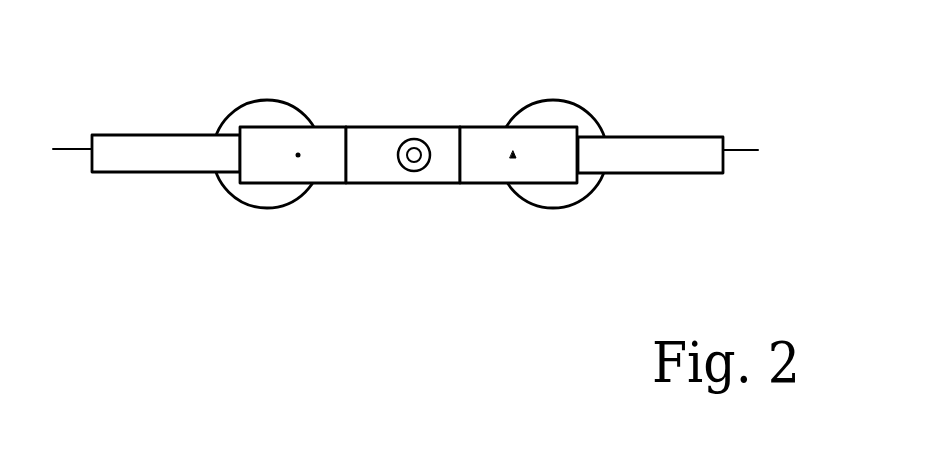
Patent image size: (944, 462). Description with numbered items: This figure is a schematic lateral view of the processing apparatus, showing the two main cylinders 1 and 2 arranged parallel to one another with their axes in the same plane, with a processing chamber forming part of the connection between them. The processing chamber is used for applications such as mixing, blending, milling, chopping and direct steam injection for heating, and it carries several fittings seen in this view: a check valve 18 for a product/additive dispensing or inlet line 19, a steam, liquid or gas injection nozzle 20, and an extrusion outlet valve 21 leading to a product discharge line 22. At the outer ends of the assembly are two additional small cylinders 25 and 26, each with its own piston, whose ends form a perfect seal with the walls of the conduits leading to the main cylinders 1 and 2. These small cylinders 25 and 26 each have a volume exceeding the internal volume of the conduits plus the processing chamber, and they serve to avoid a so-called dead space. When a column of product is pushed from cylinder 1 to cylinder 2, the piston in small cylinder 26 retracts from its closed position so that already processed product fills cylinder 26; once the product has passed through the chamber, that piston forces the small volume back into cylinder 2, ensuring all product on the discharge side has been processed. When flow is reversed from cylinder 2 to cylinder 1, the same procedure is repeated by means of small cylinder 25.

The cylinder 1 is at (267, 112).
The cylinder 2 is at (557, 100).
The check valve 18 is at (298, 155).
The product/additive dispensing or inlet line 19 is at (283, 168).
The steam, liquid or gas injection nozzle 20 is at (408, 138).
The extrusion outlet valve 21 is at (513, 155).
The product discharge line 22 is at (528, 170).
The additional small cylinder 25 is at (153, 142).
The additional small cylinder 26 is at (640, 137).